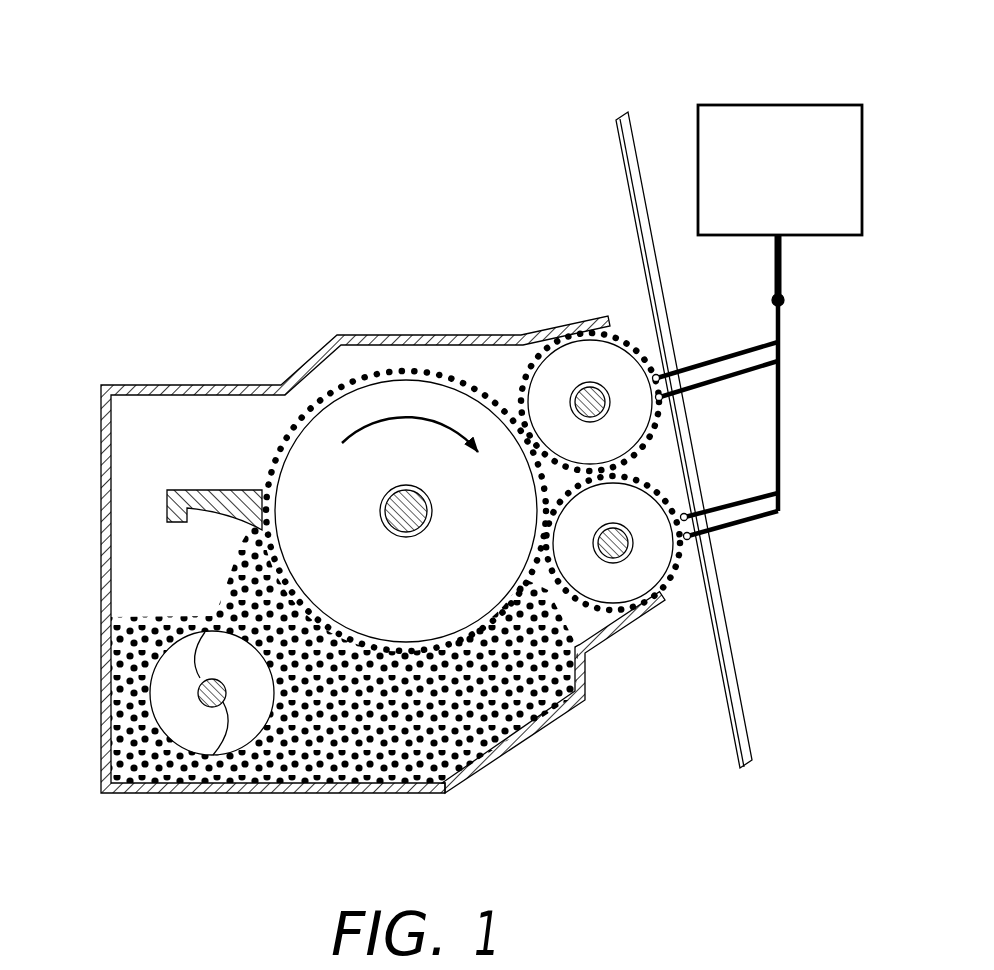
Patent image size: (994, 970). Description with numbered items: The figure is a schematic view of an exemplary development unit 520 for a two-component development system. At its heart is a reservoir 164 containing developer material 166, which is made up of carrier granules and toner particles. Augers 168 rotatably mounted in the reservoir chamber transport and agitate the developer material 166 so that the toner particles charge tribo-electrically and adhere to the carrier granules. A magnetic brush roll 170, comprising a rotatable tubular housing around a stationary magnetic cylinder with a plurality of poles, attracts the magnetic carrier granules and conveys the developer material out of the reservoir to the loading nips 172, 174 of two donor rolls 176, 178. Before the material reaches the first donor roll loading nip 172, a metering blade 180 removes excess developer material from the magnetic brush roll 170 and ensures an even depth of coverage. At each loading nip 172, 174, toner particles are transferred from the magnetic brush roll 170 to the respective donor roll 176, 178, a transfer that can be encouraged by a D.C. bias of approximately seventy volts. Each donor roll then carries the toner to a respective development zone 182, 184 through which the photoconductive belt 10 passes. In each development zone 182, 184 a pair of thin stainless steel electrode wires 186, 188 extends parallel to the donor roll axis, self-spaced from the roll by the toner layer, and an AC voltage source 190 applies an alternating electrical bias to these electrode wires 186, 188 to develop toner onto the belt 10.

The photoconductive belt 10 is at (626, 110).
The developer unit 520 is at (165, 330).
The reservoir 164 is at (522, 740).
The developer material 166 is at (470, 742).
The augers 168 is at (190, 720).
The magnetic brush roll 170 is at (398, 402).
The first donor roll loading nip 172 is at (502, 388).
The second donor roll loading nip 174 is at (547, 593).
The first donor roll 176 is at (568, 358).
The second donor roll 178 is at (633, 580).
The metering blade 180 is at (170, 502).
The first development zone 182 is at (645, 347).
The second development zone 184 is at (685, 598).
The electrode wires 186 is at (657, 378).
The electrode wires 188 is at (683, 518).
The AC voltage source 190 is at (775, 105).